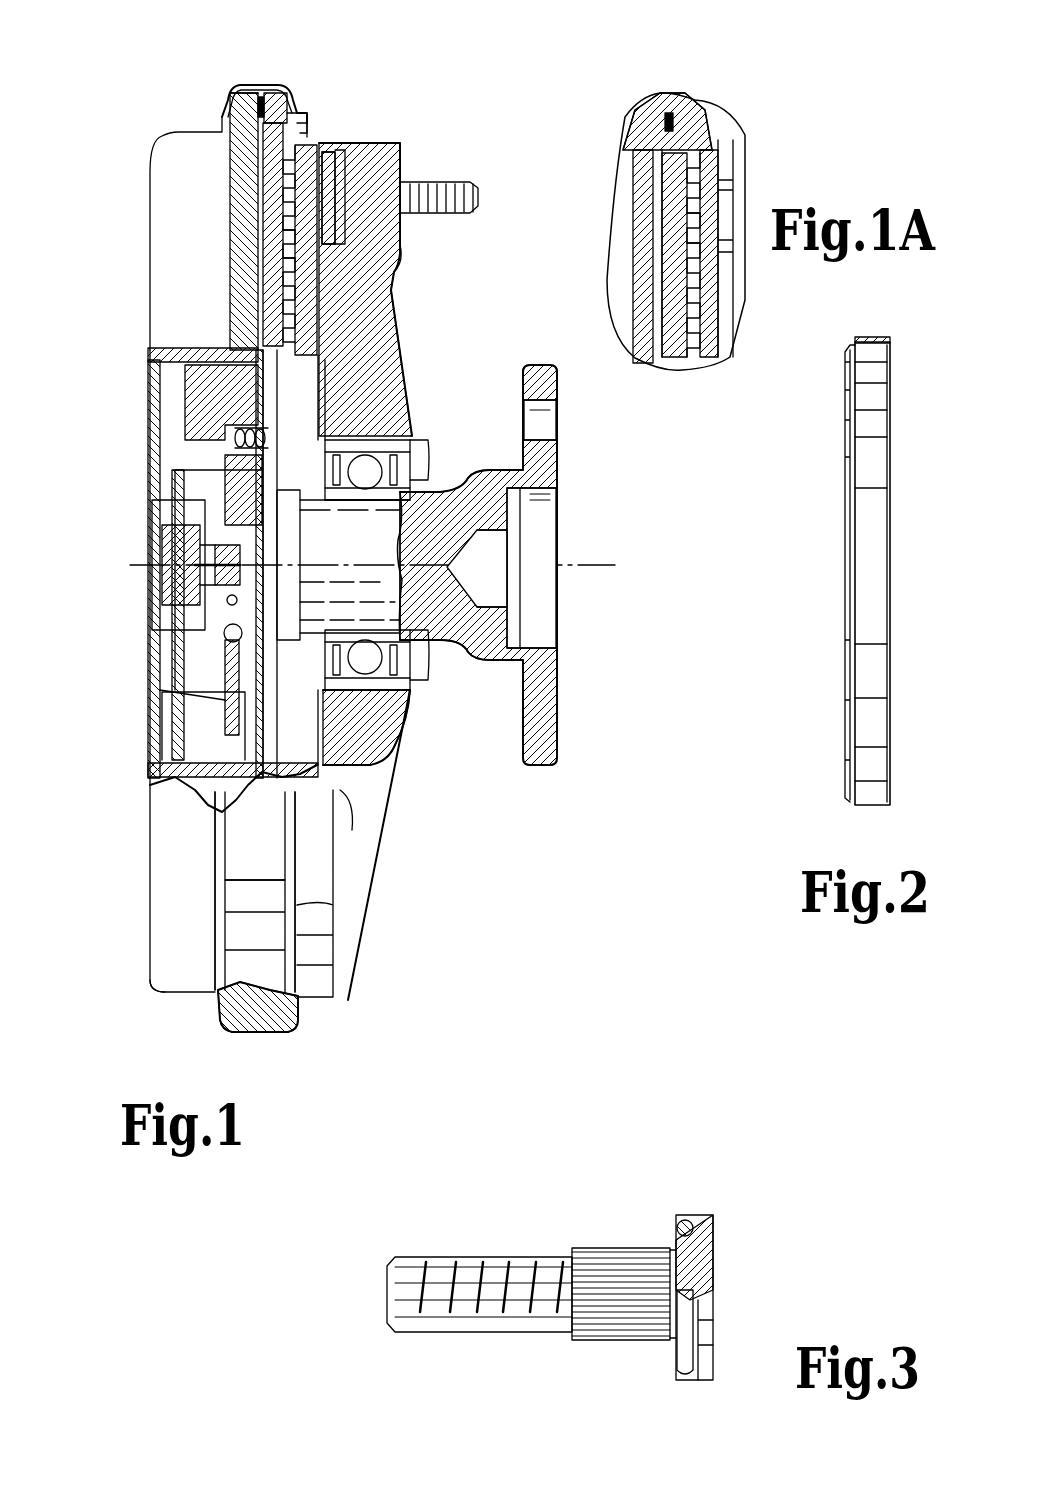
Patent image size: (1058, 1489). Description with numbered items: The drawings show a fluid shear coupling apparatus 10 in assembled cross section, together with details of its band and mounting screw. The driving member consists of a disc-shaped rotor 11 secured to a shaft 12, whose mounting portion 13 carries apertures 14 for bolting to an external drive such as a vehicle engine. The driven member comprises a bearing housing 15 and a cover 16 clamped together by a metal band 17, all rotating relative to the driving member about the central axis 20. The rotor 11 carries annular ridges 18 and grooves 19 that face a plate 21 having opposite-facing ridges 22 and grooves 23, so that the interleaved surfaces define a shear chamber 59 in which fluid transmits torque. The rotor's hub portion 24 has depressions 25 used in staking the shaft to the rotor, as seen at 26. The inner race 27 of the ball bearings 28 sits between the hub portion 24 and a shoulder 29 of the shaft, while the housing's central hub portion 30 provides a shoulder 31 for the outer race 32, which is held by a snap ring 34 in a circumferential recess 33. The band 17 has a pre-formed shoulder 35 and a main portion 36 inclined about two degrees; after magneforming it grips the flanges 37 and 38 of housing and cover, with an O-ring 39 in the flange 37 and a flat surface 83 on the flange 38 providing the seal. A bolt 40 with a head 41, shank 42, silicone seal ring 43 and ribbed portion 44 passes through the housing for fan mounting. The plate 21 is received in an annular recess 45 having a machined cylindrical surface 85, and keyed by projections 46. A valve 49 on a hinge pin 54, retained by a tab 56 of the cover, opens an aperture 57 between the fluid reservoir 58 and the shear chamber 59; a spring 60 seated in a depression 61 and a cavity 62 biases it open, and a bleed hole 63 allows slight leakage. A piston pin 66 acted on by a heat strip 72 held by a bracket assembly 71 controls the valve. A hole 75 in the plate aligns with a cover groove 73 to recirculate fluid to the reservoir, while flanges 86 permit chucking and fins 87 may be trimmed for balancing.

In FIG. 1, the fluid shear coupling apparatus 10 is at (136, 1018).
In FIG. 1, the rotor 11 is at (300, 340).
In FIG. 1, the shaft 12 is at (420, 605).
In FIG. 1, the mounting portion 13 is at (535, 465).
In FIG. 1, the apertures 14 is at (540, 428).
In FIG. 1, the bearing housing 15 is at (375, 172).
In FIG. 1A, the bearing housing 15 is at (735, 145).
In FIG. 1, the cover 16 is at (172, 155).
In FIG. 1, the band 17 is at (350, 910).
In FIG. 2, the band 17 is at (882, 478).
In FIG. 1, the annular ridges 18 is at (292, 170).
In FIG. 1A, the annular ridges 18 is at (695, 175).
In FIG. 1, the grooves 19 is at (292, 196).
In FIG. 1A, the grooves 19 is at (700, 195).
In FIG. 1, the central axis 20 is at (612, 565).
In FIG. 1, the plate 21 is at (230, 98).
In FIG. 1, the annular ridges 22 is at (292, 236).
In FIG. 1A, the annular ridges 22 is at (690, 215).
In FIG. 1, the grooves 23 is at (292, 262).
In FIG. 1A, the grooves 23 is at (690, 252).
In FIG. 1, the hub portion 24 is at (330, 452).
In FIG. 1, the depressions 25 is at (330, 500).
In FIG. 1, the staking 26 is at (276, 505).
In FIG. 1, the inner race 27 is at (400, 500).
In FIG. 1, the ball bearings 28 is at (385, 690).
In FIG. 1, the shoulder 29 is at (395, 520).
In FIG. 1, the central hub portion 30 is at (380, 700).
In FIG. 1, the shoulder 31 is at (430, 440).
In FIG. 1, the outer race 32 is at (400, 440).
In FIG. 1, the circumferential recess 33 is at (340, 700).
In FIG. 1, the snap ring 34 is at (330, 745).
In FIG. 2, the shoulder 35 is at (847, 348).
In FIG. 2, the main portion 36 is at (874, 336).
In FIG. 1, the flange 37 is at (292, 108).
In FIG. 1, the flange 38 is at (243, 96).
In FIG. 1, the O-ring 39 is at (272, 96).
In FIG. 1, the bolt 40 is at (473, 182).
In FIG. 3, the bolt 40 is at (534, 1195).
In FIG. 3, the head 41 is at (712, 1262).
In FIG. 3, the shank 42 is at (515, 1262).
In FIG. 3, the seal ring 43 is at (685, 1218).
In FIG. 3, the ribbed portion 44 is at (622, 1322).
In FIG. 1, the annular recess 45 is at (305, 138).
In FIG. 1, the projections 46 is at (300, 123).
In FIG. 1, the valve 49 is at (225, 632).
In FIG. 1, the hinge pin 54 is at (235, 640).
In FIG. 1, the tab 56 is at (210, 680).
In FIG. 1, the aperture 57 is at (190, 352).
In FIG. 1, the fluid reservoir 58 is at (215, 732).
In FIG. 1, the shear chamber 59 is at (340, 250).
In FIG. 1, the spring 60 is at (230, 445).
In FIG. 1, the depression 61 is at (228, 455).
In FIG. 1, the cavity 62 is at (232, 440).
In FIG. 1, the bleed hole 63 is at (320, 440).
In FIG. 1, the piston pin 66 is at (228, 600).
In FIG. 1, the bracket assembly 71 is at (160, 508).
In FIG. 1, the heat strip 72 is at (165, 545).
In FIG. 1A, the groove 73 is at (648, 170).
In FIG. 1A, the hole 75 is at (690, 130).
In FIG. 1, the surface 83 is at (258, 92).
In FIG. 1, the cylindrical surface 85 is at (283, 1020).
In FIG. 1, the flanges 86 is at (400, 266).
In FIG. 1, the fins 87 is at (365, 812).